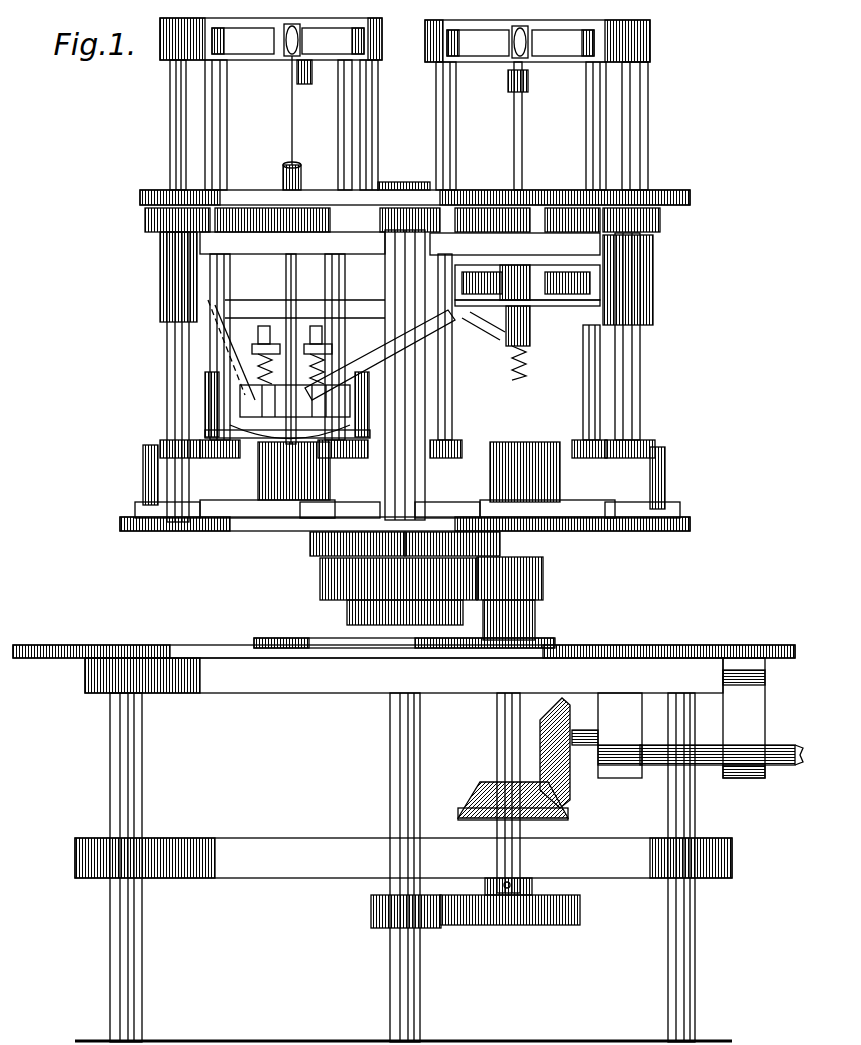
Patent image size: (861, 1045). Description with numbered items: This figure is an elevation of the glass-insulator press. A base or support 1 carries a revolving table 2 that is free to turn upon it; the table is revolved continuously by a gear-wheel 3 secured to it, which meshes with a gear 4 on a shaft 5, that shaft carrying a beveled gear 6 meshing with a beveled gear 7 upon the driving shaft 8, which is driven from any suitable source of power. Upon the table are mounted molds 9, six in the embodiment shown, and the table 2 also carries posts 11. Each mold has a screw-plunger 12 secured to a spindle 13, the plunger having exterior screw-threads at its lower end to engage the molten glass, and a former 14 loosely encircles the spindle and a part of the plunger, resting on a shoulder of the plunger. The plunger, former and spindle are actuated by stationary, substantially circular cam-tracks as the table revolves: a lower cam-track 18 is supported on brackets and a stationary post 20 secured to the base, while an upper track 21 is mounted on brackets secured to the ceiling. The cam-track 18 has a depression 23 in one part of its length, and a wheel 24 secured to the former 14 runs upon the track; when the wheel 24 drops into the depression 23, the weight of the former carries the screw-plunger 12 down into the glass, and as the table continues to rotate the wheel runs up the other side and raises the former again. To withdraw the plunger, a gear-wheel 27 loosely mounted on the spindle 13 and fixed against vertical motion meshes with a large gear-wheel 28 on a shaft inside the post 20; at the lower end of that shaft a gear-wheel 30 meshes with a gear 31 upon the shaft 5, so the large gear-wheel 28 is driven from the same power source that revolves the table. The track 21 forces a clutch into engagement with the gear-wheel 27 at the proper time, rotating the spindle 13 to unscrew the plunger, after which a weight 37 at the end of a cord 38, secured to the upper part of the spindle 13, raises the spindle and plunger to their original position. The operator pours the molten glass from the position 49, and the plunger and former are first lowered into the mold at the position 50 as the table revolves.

The base 1 is at (212, 648).
The revolving table 2 is at (210, 531).
The gear-wheel 3 is at (320, 572).
The gear 4 is at (543, 578).
The shaft 5 is at (497, 743).
The beveled gear 6 is at (511, 798).
The beveled gear 7 is at (587, 750).
The shaft 8 is at (789, 766).
The mold 9 is at (409, 472).
The post 11 is at (172, 394).
The screw-plunger 12 is at (527, 366).
The spindle 13 is at (523, 133).
The former 14 is at (530, 340).
The cam-track 18 is at (329, 308).
The stationary post 20 is at (405, 375).
The cam-track 21 is at (326, 406).
The depression 23 is at (228, 362).
The wheel 24 is at (530, 270).
The gear-wheel 27 is at (313, 200).
The large gear-wheel 28 is at (243, 196).
The gear-wheel 30 is at (372, 925).
The gear 31 is at (555, 926).
The weight 37 is at (304, 84).
The cord 38 is at (294, 143).
The operator position 49 is at (482, 543).
The position 50 is at (338, 543).